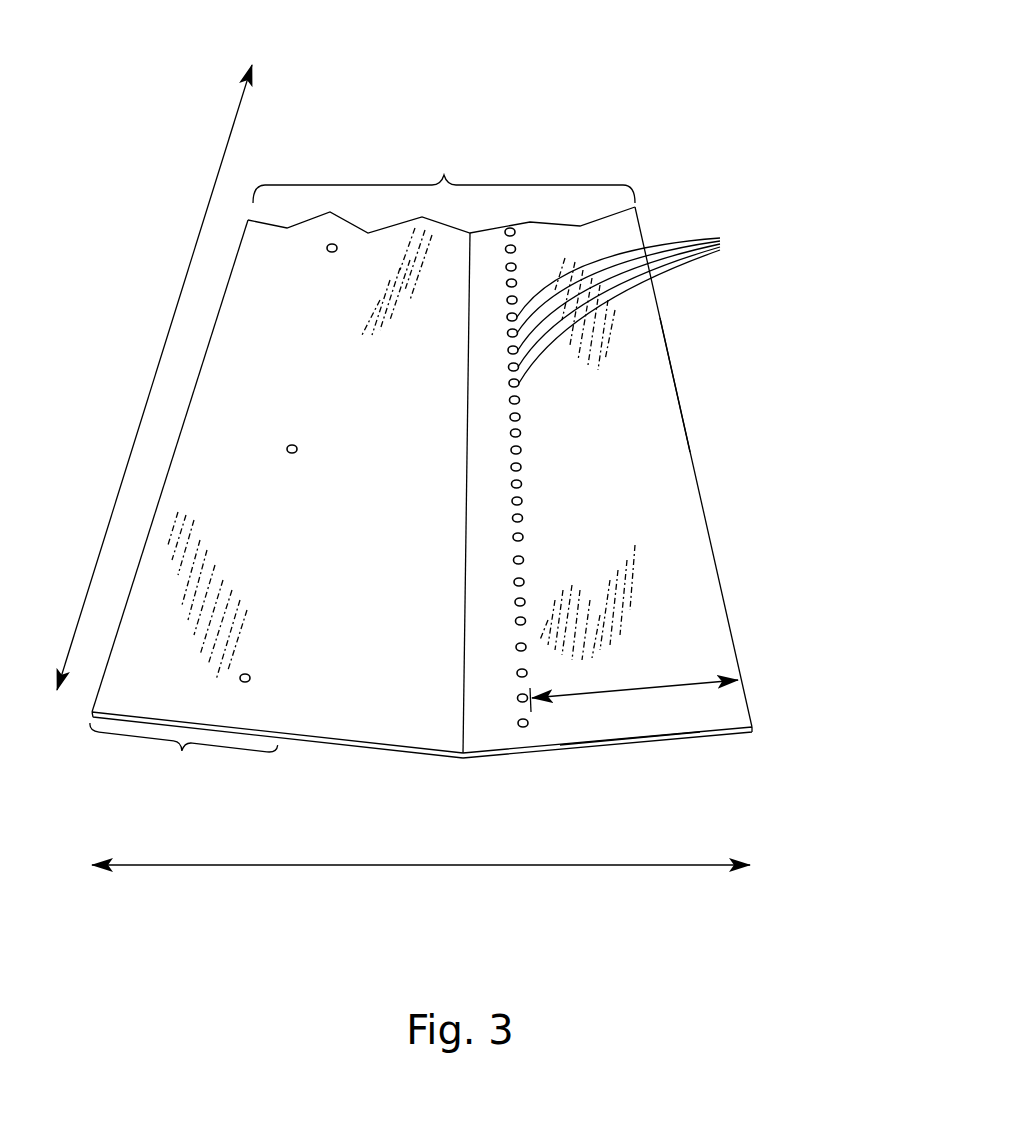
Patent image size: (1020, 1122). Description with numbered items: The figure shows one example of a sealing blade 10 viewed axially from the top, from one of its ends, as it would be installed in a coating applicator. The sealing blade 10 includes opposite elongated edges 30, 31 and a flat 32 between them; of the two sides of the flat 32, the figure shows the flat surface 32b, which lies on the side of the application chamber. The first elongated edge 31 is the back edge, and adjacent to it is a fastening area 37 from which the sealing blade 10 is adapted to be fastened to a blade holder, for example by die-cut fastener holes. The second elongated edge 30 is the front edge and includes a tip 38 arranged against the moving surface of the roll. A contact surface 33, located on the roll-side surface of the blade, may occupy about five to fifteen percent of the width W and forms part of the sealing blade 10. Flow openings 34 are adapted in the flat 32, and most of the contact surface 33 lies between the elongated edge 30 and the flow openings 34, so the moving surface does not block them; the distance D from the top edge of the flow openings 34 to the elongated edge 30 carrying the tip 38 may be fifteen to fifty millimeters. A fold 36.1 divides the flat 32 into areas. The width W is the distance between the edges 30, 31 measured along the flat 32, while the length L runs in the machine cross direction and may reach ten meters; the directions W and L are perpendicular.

The sealing blade 10 is at (435, 422).
The second elongated edge 30 is at (695, 442).
The first elongated edge 31 is at (150, 523).
The flat 32 is at (446, 168).
The flat surface 32b is at (430, 501).
The contact surface 33 is at (612, 748).
The flow openings 34 is at (639, 306).
The fold 36.1 is at (466, 598).
The fastening area 37 is at (182, 759).
The tip 38 is at (670, 358).
The length L is at (167, 287).
The width W is at (430, 884).
The distance D is at (636, 676).